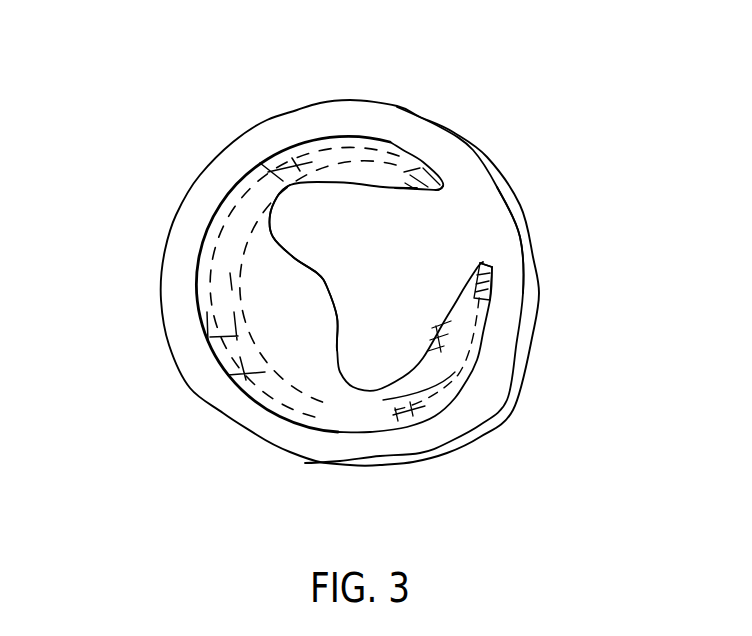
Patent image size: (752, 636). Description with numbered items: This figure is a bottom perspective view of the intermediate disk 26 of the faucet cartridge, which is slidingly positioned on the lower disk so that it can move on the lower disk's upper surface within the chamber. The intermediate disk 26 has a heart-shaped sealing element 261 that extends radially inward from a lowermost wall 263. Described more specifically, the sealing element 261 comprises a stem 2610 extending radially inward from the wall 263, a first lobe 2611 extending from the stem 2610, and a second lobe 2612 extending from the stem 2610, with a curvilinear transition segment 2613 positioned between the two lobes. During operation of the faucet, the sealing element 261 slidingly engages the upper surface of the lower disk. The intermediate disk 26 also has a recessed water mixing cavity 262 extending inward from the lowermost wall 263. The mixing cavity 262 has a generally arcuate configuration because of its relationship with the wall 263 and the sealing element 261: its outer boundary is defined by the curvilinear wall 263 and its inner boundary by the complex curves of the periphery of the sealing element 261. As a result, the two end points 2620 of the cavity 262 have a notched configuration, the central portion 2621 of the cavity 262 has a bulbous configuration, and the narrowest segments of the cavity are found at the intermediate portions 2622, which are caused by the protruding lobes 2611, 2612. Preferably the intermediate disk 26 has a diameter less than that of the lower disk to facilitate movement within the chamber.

The intermediate disk 26 is at (355, 100).
The sealing element 261 is at (438, 238).
The water mixing cavity 262 is at (257, 280).
The lowermost wall 263 is at (202, 210).
The stem 2610 is at (448, 213).
The first lobe 2611 is at (303, 220).
The second lobe 2612 is at (373, 364).
The curvilinear transition segment 2613 is at (338, 270).
The end points 2620 is at (390, 175).
The central portion 2621 is at (280, 333).
The intermediate portions 2622 is at (393, 397).